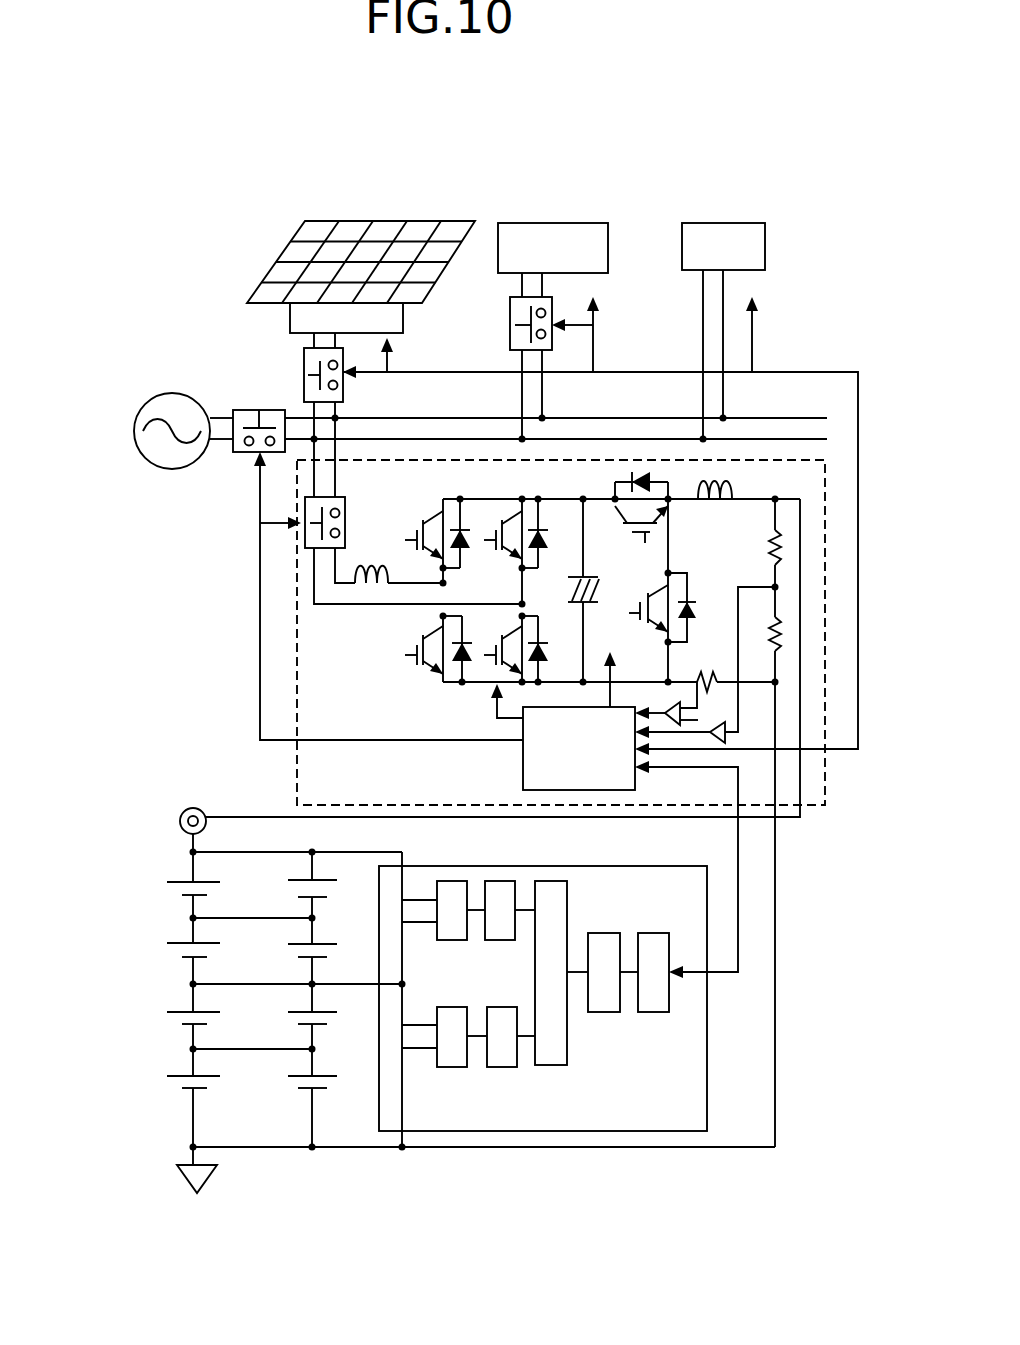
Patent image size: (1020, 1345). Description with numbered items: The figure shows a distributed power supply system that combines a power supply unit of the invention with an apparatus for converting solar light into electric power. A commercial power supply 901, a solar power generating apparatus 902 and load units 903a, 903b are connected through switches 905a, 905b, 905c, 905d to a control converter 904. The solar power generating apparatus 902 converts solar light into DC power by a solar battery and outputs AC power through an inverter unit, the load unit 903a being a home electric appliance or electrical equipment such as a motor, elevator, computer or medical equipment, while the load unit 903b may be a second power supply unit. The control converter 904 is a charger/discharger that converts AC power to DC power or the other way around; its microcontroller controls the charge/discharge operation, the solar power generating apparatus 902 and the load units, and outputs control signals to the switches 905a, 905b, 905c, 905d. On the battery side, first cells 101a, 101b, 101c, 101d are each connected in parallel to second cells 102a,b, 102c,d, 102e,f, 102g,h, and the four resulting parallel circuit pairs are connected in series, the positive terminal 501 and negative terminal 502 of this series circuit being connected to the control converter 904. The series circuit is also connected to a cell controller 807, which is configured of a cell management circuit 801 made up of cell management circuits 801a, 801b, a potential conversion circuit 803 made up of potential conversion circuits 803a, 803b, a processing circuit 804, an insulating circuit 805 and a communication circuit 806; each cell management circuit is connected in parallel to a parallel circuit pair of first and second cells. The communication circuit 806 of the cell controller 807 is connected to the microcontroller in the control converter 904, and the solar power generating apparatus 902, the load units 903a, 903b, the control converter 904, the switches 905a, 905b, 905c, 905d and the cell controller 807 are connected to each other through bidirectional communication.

The commercial power supply 901 is at (163, 392).
The solar power generating apparatus 902 is at (325, 220).
The load unit 903a is at (540, 223).
The load unit 903b is at (732, 222).
The control converter 904 is at (296, 683).
The switch 905a is at (240, 453).
The switch 905b is at (343, 392).
The switch 905c is at (510, 323).
The switch 905d is at (346, 522).
The positive terminal 501 is at (180, 821).
The negative terminal 502 is at (180, 1170).
The first cell 101a is at (175, 888).
The first cell 101b is at (175, 950).
The first cell 101c is at (175, 1017).
The first cell 101d is at (175, 1080).
The second cells 102a,b is at (272, 885).
The second cells 102c,d is at (272, 951).
The second cells 102e,f is at (272, 1017).
The second cells 102g,h is at (272, 1098).
The cell management circuit 801 is at (456, 1049).
The cell management circuit 801a is at (450, 940).
The cell management circuit 801b is at (450, 1067).
The potential conversion circuit 803 is at (544, 1049).
The potential conversion circuit 803a is at (500, 940).
The potential conversion circuit 803b is at (502, 1067).
The processing circuit 804 is at (552, 1065).
The insulating circuit 805 is at (603, 1012).
The communication circuit 806 is at (655, 1012).
The cell controller 807 is at (707, 1110).